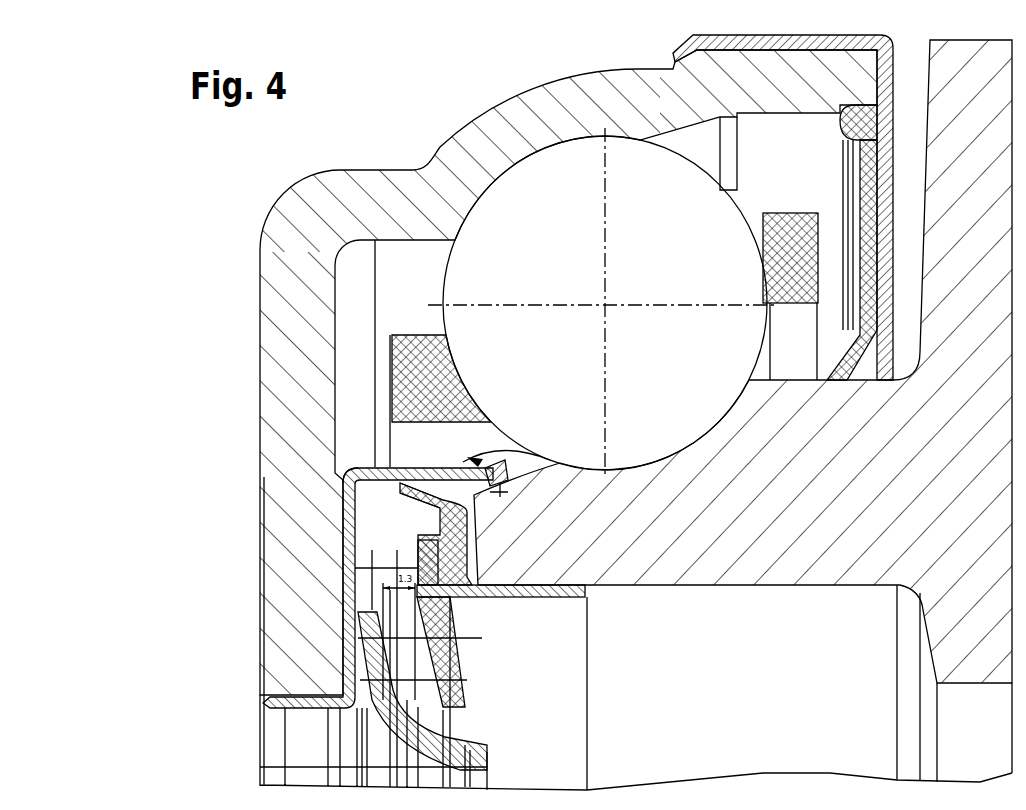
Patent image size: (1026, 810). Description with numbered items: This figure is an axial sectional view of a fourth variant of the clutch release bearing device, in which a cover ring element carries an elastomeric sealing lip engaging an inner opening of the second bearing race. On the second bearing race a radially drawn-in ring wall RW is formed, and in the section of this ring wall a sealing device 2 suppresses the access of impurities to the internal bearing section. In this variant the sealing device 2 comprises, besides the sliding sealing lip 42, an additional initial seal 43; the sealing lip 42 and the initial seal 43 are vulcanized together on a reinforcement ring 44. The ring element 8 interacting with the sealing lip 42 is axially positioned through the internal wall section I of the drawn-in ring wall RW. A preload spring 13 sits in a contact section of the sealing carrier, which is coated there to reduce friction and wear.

The radial drawn-in ring wall RW is at (274, 378).
The internal wall section I is at (343, 478).
The sealing device 2 is at (374, 523).
The ring element 8 is at (352, 555).
The sealing lip 42 is at (397, 504).
The reinforcement ring 44 is at (417, 568).
The initial seal 43 is at (430, 650).
The preload spring 13 is at (373, 667).